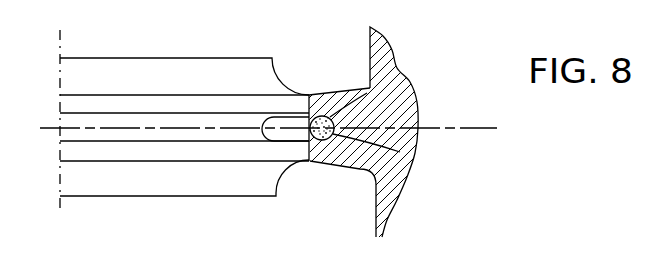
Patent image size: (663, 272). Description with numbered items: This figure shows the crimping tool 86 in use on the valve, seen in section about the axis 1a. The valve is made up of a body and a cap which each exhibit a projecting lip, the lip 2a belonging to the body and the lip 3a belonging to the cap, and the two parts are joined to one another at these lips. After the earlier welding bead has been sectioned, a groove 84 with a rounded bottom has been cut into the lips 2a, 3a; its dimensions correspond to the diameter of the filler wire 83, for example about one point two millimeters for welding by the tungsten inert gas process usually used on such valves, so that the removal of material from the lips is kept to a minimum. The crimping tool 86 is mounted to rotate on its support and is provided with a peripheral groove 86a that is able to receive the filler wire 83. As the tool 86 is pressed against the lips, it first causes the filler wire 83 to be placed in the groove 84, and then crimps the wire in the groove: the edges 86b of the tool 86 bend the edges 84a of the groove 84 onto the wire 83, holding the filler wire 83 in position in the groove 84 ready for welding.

The crimping tool 86 is at (170, 58).
The peripheral groove 86a is at (218, 122).
The edges of the crimping tool 86b is at (335, 93).
The groove 84 is at (335, 125).
The edges of the groove 84a is at (312, 160).
The filler wire 83 is at (400, 152).
The projecting lip of the cap 3a is at (367, 93).
The projecting lip of the body 2a is at (347, 168).
The central axis 1a is at (452, 127).